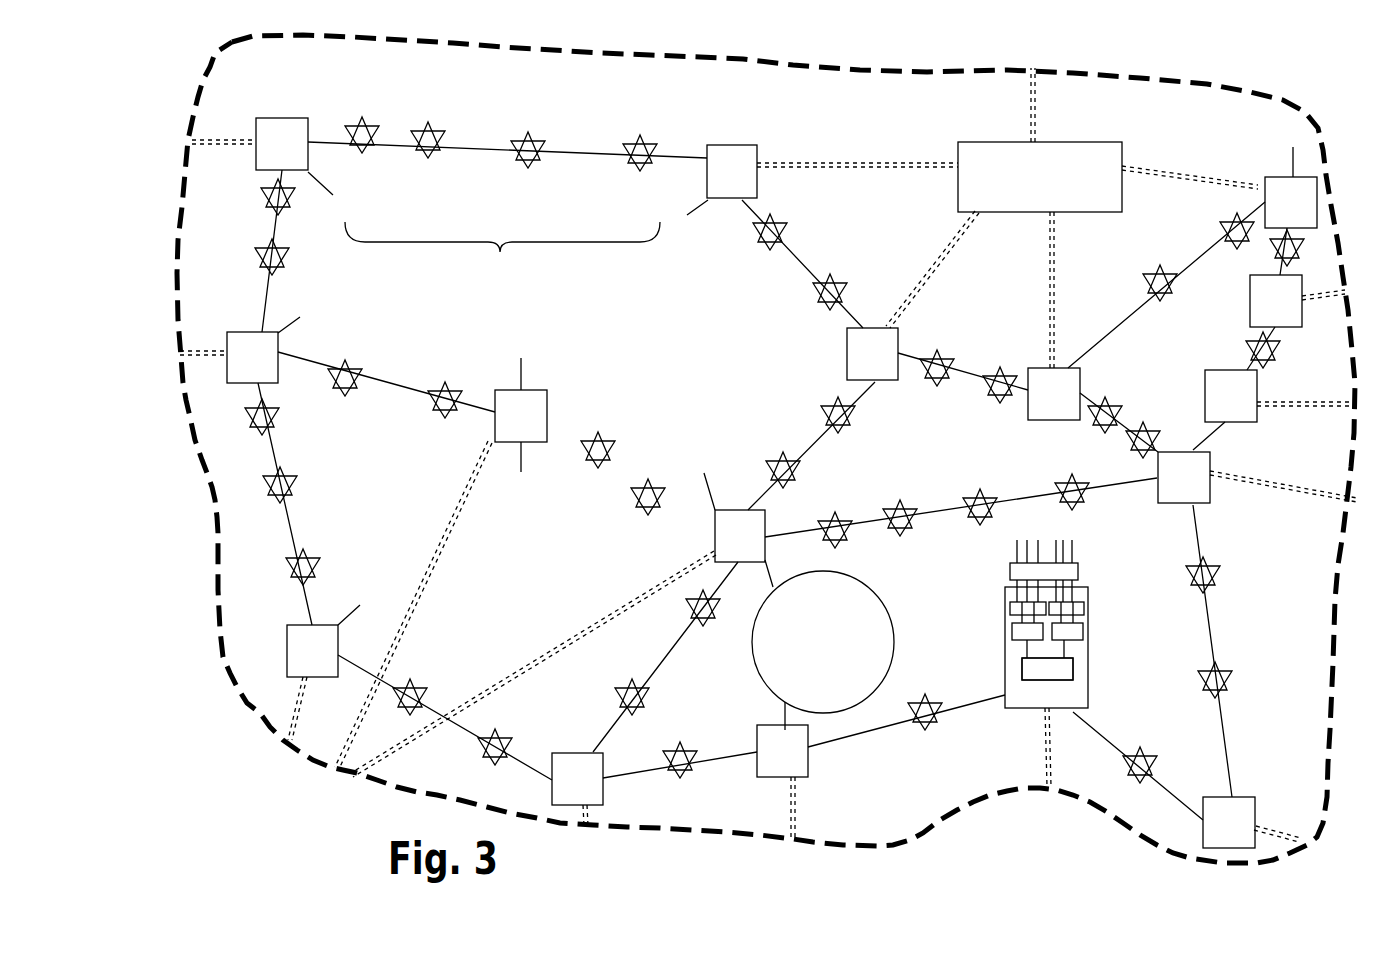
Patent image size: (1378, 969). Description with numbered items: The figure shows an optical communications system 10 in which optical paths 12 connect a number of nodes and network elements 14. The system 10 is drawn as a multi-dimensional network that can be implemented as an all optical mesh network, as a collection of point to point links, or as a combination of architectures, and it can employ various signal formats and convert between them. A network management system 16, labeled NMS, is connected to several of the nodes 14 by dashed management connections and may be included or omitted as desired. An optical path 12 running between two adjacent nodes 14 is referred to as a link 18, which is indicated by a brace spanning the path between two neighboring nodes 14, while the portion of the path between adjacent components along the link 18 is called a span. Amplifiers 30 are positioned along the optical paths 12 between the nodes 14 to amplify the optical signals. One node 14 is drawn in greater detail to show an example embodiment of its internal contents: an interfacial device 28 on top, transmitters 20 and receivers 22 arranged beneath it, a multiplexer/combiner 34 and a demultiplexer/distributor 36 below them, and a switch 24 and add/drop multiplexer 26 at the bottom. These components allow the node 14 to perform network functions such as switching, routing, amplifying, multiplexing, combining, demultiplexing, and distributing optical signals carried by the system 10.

The optical communications system 10 is at (295, 812).
The optical path 12 is at (598, 168).
The node 14 is at (278, 118).
The network management system 16 is at (990, 142).
The link 18 is at (502, 263).
The transmitter 20 is at (1010, 608).
The receiver 22 is at (1084, 607).
The switch 24 is at (1073, 672).
The add/drop multiplexer 26 is at (1047, 669).
The interfacial device 28 is at (1078, 568).
The amplifier 30 is at (530, 130).
The multiplexer/combiner 34 is at (1012, 633).
The demultiplexer/distributor 36 is at (1084, 636).